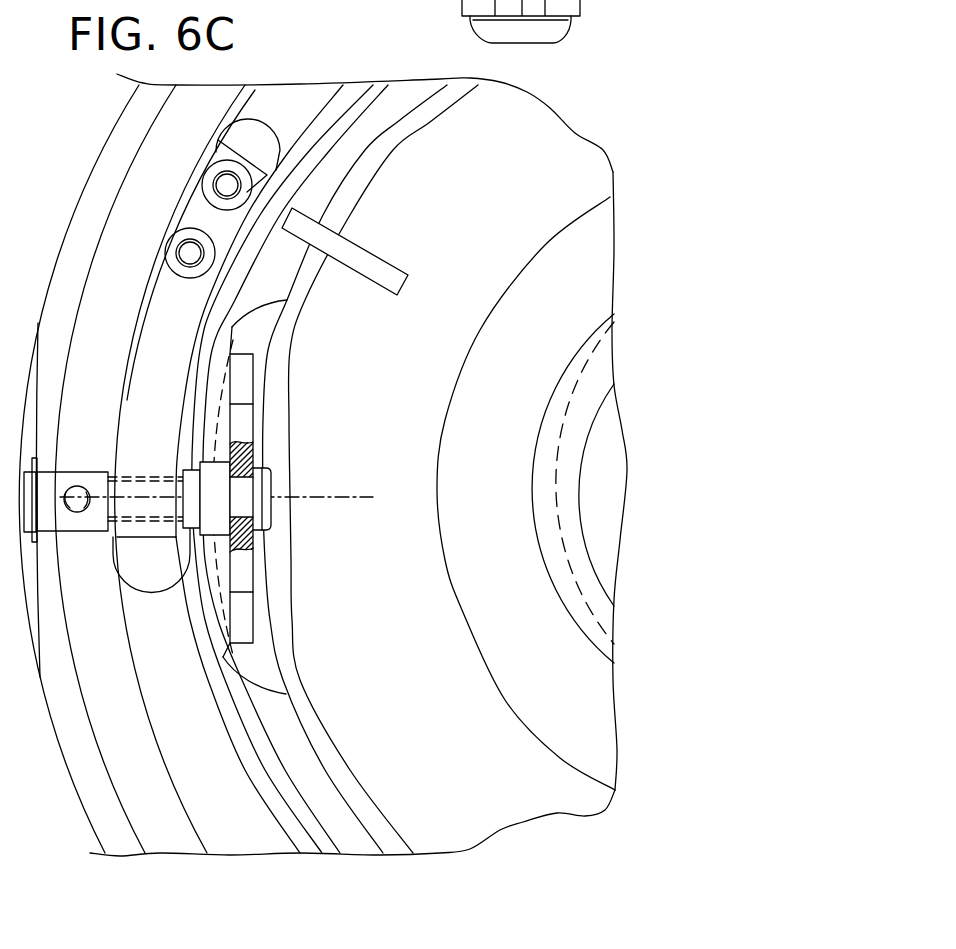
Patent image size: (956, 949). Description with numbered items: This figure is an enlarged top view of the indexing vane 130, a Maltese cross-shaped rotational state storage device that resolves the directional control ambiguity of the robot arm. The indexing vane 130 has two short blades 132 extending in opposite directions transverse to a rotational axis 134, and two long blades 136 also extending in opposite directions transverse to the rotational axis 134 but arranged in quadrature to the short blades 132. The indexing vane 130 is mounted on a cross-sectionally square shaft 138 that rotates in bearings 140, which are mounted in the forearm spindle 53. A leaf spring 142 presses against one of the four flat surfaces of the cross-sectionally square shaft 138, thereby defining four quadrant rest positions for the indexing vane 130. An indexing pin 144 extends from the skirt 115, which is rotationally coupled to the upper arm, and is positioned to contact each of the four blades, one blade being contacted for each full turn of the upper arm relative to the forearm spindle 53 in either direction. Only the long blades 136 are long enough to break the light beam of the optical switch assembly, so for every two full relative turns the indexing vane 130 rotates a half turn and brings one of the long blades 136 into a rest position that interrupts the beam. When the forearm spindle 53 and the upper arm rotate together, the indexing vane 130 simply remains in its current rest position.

The forearm spindle 53 is at (196, 735).
The skirt 115 is at (430, 677).
The indexing vane 130 is at (292, 556).
The short blades 132 is at (242, 507).
The rotational axis 134 is at (343, 493).
The long blades 136 is at (243, 372).
The cross-sectionally square shaft 138 is at (147, 473).
The bearings 140 is at (65, 522).
The leaf spring 142 is at (181, 396).
The indexing pin 144 is at (300, 224).